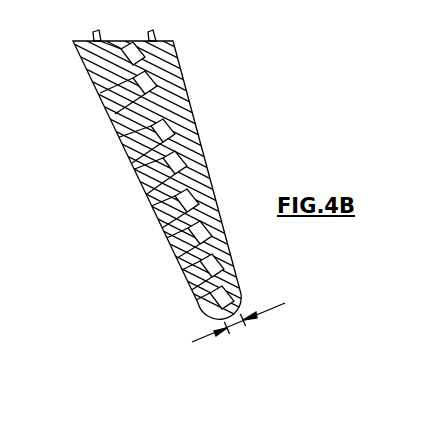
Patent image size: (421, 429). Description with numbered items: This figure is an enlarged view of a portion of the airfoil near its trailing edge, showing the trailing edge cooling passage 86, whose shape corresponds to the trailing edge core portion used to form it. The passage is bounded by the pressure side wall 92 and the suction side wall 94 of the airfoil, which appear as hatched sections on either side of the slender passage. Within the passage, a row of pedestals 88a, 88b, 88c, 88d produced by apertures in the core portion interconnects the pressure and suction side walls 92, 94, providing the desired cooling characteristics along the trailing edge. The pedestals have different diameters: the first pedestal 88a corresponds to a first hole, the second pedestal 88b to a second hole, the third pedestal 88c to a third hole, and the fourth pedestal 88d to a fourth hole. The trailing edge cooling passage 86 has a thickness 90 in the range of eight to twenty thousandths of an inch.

The trailing edge cooling passage 86 is at (185, 84).
The first pedestal 88a is at (150, 107).
The second pedestal 88b is at (130, 78).
The third pedestal 88c is at (207, 249).
The fourth pedestal 88d is at (212, 288).
The thickness 90 is at (240, 326).
The pressure side wall 92 is at (135, 128).
The suction side wall 94 is at (203, 196).